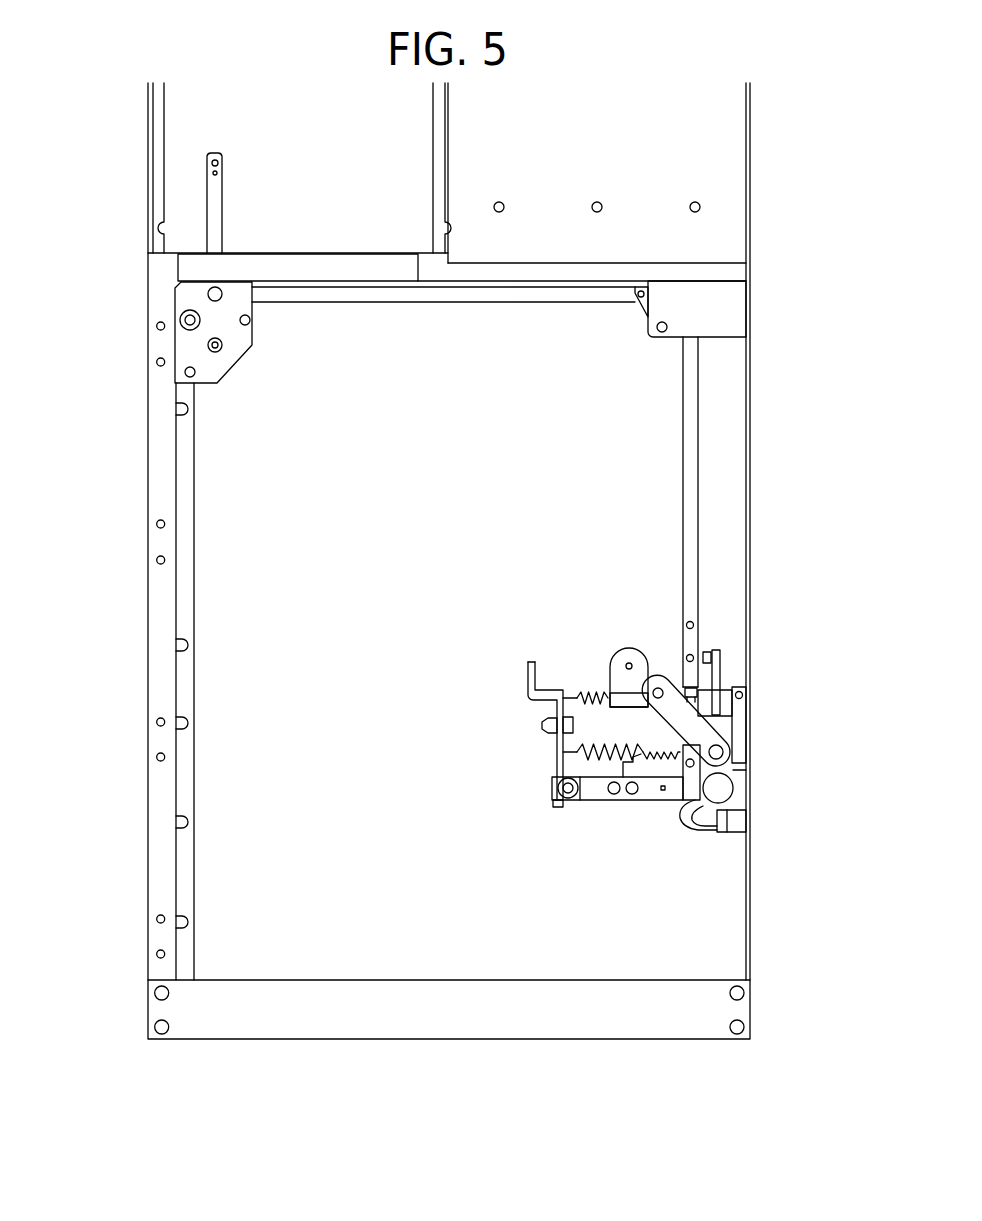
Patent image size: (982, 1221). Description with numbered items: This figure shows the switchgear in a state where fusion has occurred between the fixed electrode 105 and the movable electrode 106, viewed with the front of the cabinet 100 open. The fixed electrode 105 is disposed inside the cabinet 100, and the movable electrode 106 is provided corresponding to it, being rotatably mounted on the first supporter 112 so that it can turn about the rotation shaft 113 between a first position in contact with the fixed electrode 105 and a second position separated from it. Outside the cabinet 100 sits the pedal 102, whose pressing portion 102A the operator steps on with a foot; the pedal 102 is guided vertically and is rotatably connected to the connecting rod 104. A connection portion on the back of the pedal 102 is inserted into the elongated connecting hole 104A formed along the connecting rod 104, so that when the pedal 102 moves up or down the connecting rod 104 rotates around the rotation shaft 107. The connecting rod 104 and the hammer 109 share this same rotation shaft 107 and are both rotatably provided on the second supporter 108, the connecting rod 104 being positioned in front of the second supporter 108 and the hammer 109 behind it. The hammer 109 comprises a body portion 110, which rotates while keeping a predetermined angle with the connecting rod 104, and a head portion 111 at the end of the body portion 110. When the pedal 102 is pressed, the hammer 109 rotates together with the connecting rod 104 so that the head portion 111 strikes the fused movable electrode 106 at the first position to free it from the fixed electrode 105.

The cabinet 100 is at (147, 302).
The pedal 102 is at (627, 655).
The pressing portion 102A is at (627, 700).
The connecting rod 104 is at (685, 718).
The connecting hole 104A is at (661, 684).
The fixed electrode 105 is at (558, 742).
The movable electrode 106 is at (597, 790).
The rotation shaft 107 is at (718, 752).
The second supporter 108 is at (725, 727).
The hammer 109 is at (781, 648).
The body portion 110 is at (715, 660).
The head portion 111 is at (707, 650).
The first supporter 112 is at (740, 798).
The rotation shaft 113 is at (718, 808).